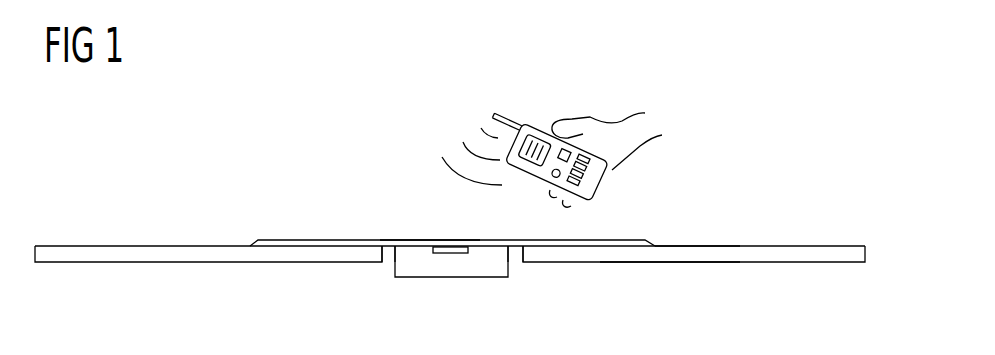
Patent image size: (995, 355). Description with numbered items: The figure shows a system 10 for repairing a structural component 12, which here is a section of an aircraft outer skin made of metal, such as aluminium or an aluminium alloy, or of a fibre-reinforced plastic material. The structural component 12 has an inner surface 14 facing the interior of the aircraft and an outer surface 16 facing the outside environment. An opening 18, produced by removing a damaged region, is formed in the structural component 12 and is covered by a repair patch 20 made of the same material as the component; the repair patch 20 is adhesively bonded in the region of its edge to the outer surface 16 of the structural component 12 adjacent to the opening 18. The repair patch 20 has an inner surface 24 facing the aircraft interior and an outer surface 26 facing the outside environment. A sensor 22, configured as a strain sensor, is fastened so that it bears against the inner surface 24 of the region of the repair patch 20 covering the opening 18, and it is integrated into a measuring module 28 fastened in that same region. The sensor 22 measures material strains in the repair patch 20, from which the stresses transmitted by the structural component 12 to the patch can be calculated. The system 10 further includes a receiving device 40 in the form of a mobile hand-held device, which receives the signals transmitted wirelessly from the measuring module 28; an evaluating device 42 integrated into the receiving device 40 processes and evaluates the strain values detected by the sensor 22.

The system 10 is at (735, 84).
The structural component 12 is at (747, 253).
The inner surface 14 is at (670, 262).
The outer surface 16 is at (698, 245).
The opening 18 is at (517, 255).
The repair patch 20 is at (289, 238).
The sensor 22 is at (442, 253).
The inner surface 24 is at (385, 262).
The outer surface 26 is at (395, 242).
The measuring module 28 is at (490, 270).
The receiving device 40 is at (478, 116).
The evaluating device 42 is at (585, 123).